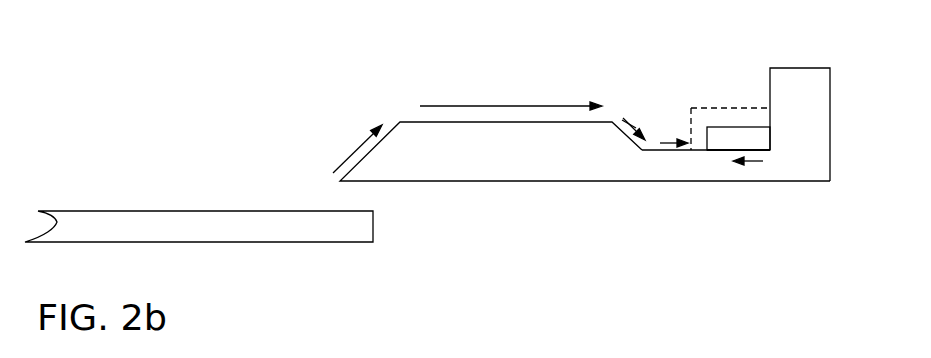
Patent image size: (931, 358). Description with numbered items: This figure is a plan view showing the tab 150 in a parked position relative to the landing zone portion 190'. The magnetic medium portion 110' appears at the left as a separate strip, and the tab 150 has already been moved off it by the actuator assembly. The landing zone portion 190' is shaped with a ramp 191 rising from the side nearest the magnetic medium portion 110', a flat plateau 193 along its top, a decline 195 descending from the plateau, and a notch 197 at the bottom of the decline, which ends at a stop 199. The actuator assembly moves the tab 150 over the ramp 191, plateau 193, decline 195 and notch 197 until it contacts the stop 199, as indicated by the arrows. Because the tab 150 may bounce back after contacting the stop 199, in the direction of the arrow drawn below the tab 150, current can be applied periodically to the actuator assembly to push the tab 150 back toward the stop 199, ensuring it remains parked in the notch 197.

The magnetic medium portion 110' is at (199, 262).
The tab 150 is at (743, 127).
The landing zone portion 190' is at (585, 190).
The ramp 191 is at (358, 150).
The plateau 193 is at (503, 122).
The decline 195 is at (632, 124).
The notch 197 is at (672, 150).
The stop 199 is at (768, 85).